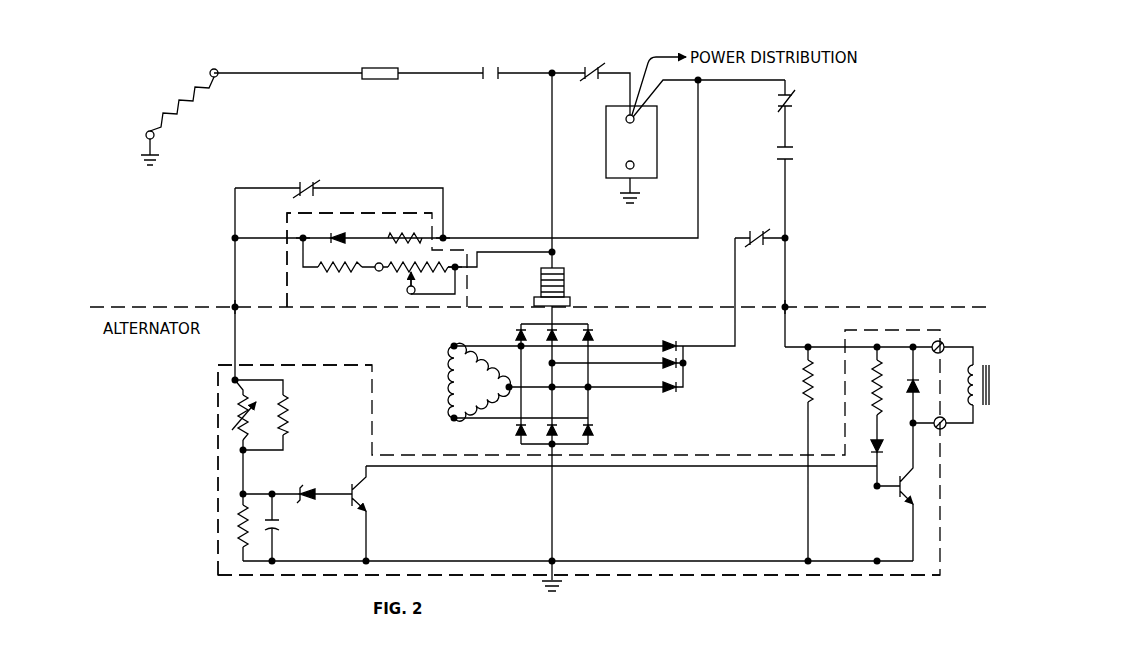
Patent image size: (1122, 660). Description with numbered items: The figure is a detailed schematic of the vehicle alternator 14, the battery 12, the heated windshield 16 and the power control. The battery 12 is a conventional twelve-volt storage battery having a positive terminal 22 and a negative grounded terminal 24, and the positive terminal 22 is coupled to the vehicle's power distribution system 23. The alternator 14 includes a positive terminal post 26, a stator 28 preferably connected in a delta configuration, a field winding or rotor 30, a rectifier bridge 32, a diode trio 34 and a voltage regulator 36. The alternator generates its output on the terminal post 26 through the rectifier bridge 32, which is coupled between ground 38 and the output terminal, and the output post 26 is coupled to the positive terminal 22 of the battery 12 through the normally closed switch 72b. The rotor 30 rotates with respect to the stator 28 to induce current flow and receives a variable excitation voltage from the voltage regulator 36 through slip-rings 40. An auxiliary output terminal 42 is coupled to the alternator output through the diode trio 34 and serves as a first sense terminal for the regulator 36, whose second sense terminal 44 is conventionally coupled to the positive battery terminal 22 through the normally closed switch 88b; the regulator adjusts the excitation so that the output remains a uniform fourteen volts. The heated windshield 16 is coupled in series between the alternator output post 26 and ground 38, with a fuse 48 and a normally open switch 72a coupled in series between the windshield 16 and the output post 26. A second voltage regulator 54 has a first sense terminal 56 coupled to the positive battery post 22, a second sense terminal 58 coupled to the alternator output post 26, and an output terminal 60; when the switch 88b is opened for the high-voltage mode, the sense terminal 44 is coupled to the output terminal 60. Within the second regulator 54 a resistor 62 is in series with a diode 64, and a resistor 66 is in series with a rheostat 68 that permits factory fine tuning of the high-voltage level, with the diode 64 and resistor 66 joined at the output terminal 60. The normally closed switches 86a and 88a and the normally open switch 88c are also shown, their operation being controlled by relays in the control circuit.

The battery 12 is at (603, 142).
The alternator 14 is at (178, 487).
The heated windshield 16 is at (172, 96).
The positive terminal 22 is at (626, 118).
The power distribution system 23 is at (795, 52).
The negative grounded terminal 24 is at (627, 168).
The positive terminal post 26 is at (568, 282).
The stator 28 is at (447, 402).
The field winding or rotor 30 is at (991, 418).
The rectifier bridge 32 is at (602, 413).
The diode trio 34 is at (676, 400).
The voltage regulator 36 is at (762, 580).
The ground 38 is at (164, 162).
The slip-rings 40 is at (946, 343).
The auxiliary output terminal 42 is at (788, 306).
The second sense terminal 44 is at (234, 305).
The fuse 48 is at (380, 68).
The second voltage regulator 54 is at (282, 218).
The first sense terminal 56 is at (446, 236).
The second sense terminal 58 is at (470, 270).
The output terminal 60 is at (288, 240).
The resistor 62 is at (413, 234).
The diode 64 is at (345, 235).
The resistor 66 is at (355, 272).
The rheostat 68 is at (402, 278).
The normally open switch 72a is at (499, 68).
The normally closed switch 72b is at (602, 70).
The normally closed switch 86a is at (793, 97).
The normally closed switch 88a is at (757, 231).
The normally closed switch 88b is at (316, 186).
The normally open switch 88c is at (795, 150).